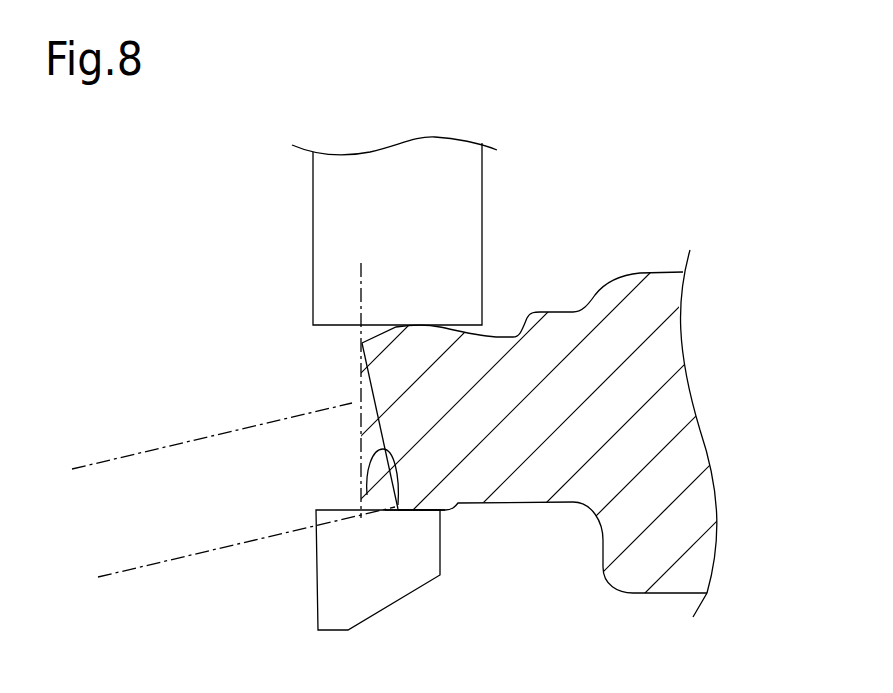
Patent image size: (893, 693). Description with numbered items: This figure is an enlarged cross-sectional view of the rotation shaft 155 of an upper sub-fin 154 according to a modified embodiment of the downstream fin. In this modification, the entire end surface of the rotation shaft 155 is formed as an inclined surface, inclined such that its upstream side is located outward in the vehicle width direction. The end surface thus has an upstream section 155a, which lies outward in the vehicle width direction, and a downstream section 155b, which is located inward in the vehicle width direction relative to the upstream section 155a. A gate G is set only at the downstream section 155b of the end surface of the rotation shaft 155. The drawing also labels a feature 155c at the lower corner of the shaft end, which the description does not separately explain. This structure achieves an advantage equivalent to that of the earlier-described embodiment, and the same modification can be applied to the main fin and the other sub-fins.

The upper sub-fin 154 is at (667, 593).
The rotation shaft 155 is at (335, 409).
The upstream section 155a is at (364, 385).
The downstream section 155b is at (381, 511).
The rounded corner surface of tip 155c is at (364, 481).
The gate G is at (107, 460).